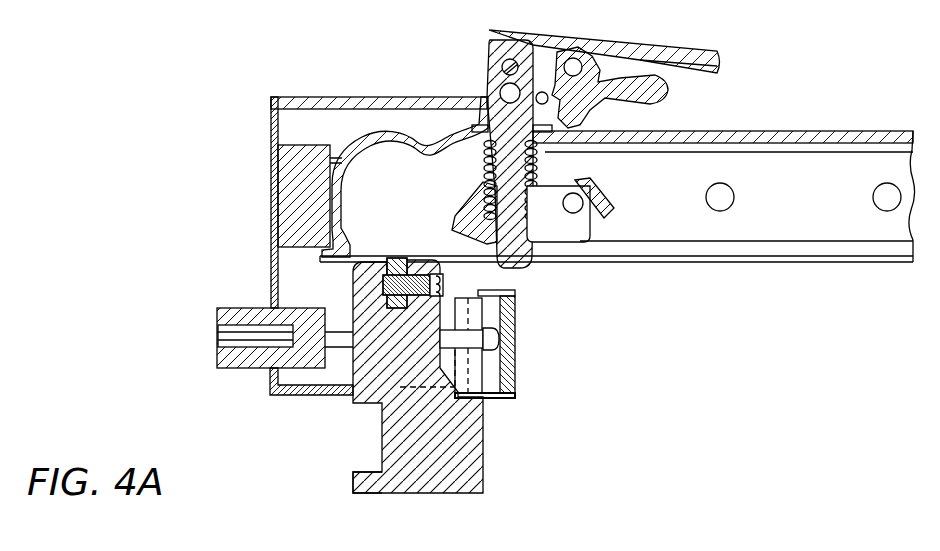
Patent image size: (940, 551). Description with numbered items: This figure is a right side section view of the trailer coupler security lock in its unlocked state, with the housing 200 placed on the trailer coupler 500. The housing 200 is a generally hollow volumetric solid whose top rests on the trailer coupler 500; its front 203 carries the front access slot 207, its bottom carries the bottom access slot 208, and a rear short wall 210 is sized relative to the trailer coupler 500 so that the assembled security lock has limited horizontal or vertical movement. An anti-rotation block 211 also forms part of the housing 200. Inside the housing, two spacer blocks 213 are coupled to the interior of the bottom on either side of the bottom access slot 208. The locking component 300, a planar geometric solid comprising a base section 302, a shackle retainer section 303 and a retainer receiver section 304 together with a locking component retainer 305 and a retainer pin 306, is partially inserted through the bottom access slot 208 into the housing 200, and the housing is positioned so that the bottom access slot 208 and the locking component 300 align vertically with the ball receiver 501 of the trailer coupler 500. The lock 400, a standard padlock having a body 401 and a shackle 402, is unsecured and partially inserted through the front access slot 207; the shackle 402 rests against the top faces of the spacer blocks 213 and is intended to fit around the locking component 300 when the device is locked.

The housing 200 is at (325, 202).
The front 203 is at (270, 203).
The front access slot 207 is at (268, 388).
The bottom access slot 208 is at (482, 398).
The rear short wall 210 is at (506, 356).
The anti-rotation block 211 is at (297, 145).
The spacer blocks 213 is at (500, 377).
The locking component 300 is at (427, 405).
The base section 302 is at (362, 483).
The shackle retainer section 303 is at (388, 438).
The retainer receiver section 304 is at (351, 382).
The locking component retainer 305 is at (350, 258).
The retainer pin 306 is at (445, 290).
The lock 400 is at (362, 332).
The body 401 is at (248, 364).
The shackle 402 is at (470, 330).
The trailer coupler 500 is at (388, 118).
The ball receiver 501 is at (372, 172).